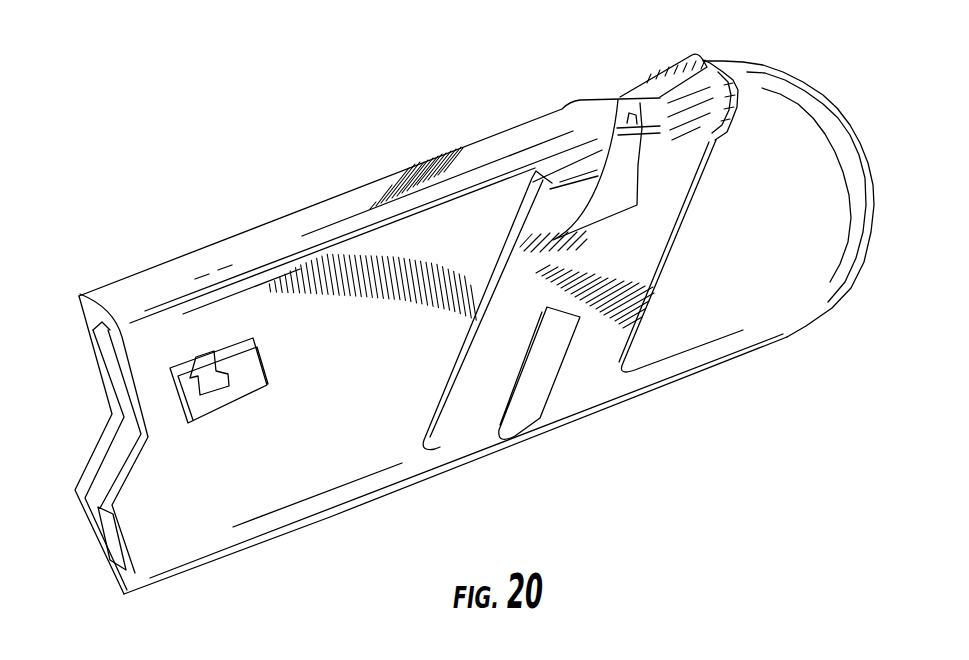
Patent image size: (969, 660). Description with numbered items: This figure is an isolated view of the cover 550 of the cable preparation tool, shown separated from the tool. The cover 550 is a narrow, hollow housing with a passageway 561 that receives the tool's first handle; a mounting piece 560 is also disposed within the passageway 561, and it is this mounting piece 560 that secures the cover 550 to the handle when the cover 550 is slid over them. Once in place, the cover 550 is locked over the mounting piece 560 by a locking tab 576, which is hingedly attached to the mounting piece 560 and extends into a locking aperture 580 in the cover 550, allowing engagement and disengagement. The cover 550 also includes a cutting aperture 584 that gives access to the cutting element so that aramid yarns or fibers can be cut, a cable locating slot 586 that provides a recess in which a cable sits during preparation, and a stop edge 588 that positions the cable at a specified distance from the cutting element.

The cover 550 is at (282, 196).
The mounting piece 560 is at (103, 538).
The passageway 561 is at (105, 462).
The locking tab 576 is at (230, 360).
The locking aperture 580 is at (222, 403).
The cutting aperture 584 is at (610, 84).
The cable locating slot 586 is at (533, 390).
The stop edge 588 is at (548, 310).